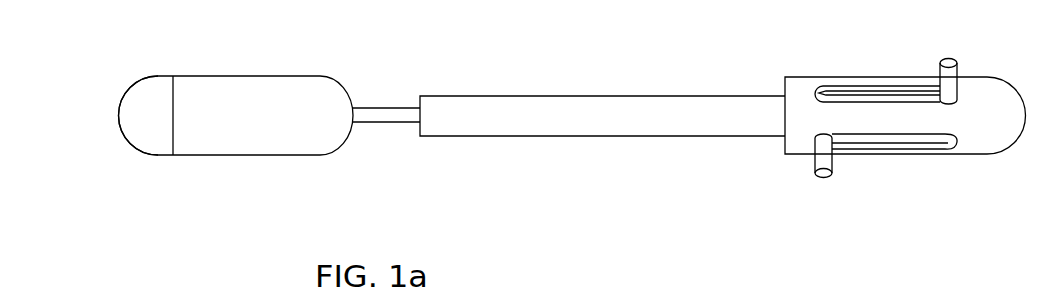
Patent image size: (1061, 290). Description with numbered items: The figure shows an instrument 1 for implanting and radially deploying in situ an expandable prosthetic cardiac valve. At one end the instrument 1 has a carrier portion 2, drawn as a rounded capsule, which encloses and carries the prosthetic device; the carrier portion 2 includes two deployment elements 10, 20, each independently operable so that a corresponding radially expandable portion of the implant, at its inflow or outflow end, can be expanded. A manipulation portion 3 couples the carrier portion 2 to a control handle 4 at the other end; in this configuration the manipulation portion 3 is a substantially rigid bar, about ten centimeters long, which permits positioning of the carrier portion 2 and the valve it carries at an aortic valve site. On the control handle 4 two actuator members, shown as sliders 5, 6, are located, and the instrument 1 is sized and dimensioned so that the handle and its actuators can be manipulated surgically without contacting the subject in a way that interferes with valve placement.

The instrument 1 is at (526, 52).
The carrier portion 2 is at (253, 50).
The manipulation portion 3 is at (522, 170).
The control handle 4 is at (1013, 112).
The slider 5 is at (940, 73).
The slider 6 is at (833, 163).
The deployment element 10 is at (203, 146).
The deployment element 20 is at (125, 116).